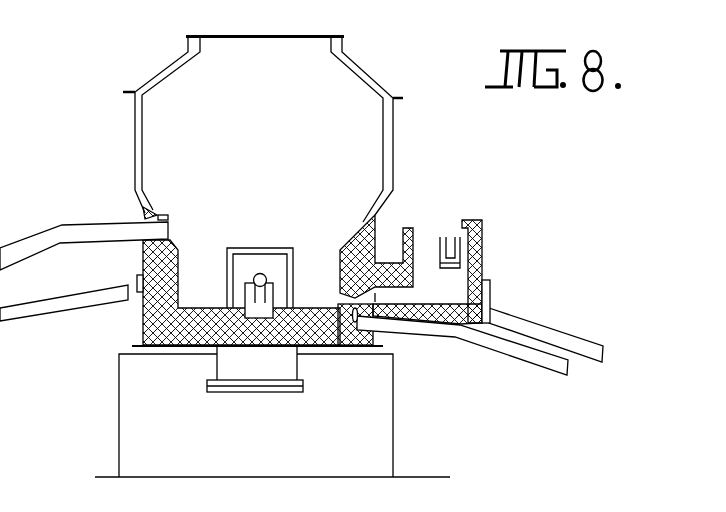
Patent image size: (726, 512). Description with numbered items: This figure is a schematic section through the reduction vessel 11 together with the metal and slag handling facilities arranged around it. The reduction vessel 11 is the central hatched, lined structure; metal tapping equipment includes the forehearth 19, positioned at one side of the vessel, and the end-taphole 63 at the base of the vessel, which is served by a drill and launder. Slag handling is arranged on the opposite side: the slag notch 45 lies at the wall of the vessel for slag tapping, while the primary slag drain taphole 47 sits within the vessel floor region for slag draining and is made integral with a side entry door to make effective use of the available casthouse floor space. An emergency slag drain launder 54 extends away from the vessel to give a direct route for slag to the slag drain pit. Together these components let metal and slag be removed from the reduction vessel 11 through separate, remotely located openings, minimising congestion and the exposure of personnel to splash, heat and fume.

The reduction vessel 11 is at (378, 167).
The forehearth 19 is at (447, 237).
The slag notch 45 is at (168, 212).
The primary slag drain taphole 47 is at (260, 274).
The emergency slag drain launder 54 is at (68, 300).
The end-taphole 63 is at (345, 345).